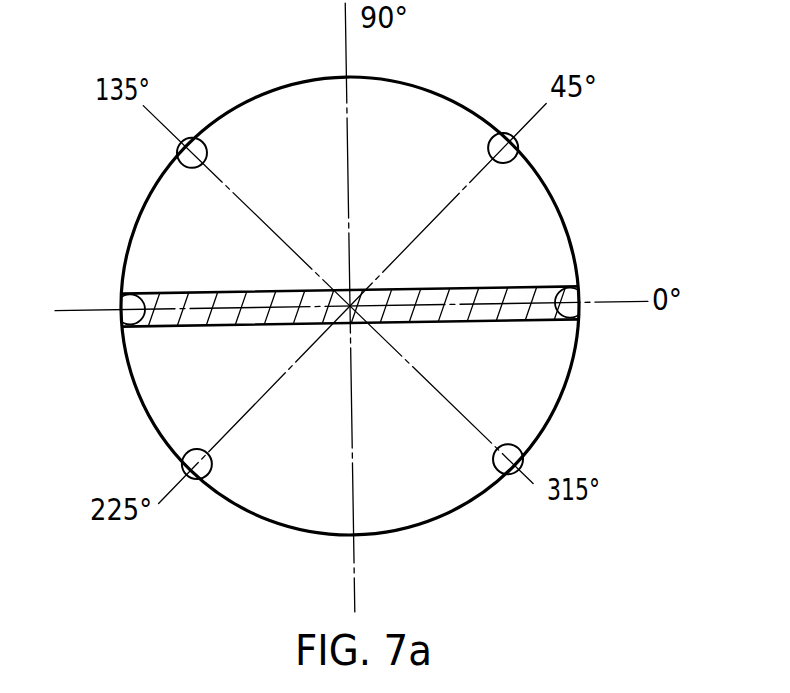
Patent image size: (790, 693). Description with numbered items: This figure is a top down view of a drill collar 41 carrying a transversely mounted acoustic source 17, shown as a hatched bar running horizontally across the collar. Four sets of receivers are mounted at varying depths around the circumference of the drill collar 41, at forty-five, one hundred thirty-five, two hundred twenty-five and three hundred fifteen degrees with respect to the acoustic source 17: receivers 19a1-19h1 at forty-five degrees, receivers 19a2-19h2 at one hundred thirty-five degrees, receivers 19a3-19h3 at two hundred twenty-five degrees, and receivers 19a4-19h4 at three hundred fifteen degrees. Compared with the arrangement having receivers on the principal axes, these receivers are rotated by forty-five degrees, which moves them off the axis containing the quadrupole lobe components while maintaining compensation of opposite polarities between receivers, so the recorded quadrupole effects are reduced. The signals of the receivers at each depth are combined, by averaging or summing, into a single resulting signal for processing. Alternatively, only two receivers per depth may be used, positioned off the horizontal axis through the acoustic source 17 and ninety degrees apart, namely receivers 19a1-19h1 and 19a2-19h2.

The drill collar 41 is at (428, 89).
The acoustic source 17 is at (170, 291).
The receivers at 45 degrees 19a1-19h1 is at (517, 152).
The receivers at 135 degrees 19a2-19h2 is at (190, 138).
The receivers at 225 degrees 19a3-19h3 is at (195, 481).
The receivers at 315 degrees 19a4-19h4 is at (530, 453).